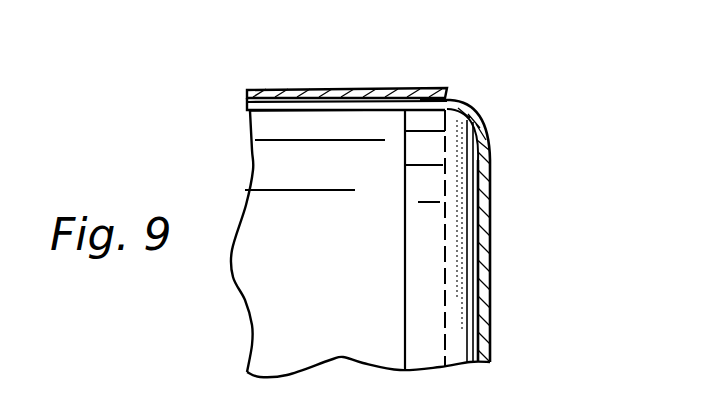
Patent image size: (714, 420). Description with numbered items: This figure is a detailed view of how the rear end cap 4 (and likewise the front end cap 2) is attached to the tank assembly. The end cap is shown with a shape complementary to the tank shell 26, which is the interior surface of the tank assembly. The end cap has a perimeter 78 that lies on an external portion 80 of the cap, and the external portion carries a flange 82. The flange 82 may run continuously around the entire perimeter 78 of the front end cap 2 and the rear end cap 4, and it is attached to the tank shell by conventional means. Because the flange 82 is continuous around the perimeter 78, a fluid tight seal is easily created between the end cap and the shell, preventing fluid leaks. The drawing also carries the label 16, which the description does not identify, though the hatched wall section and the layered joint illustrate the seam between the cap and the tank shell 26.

The front end cap 2 is at (531, 257).
The rear end cap 4 is at (491, 222).
The closure plate 16 is at (247, 113).
The tank shell 26 is at (247, 180).
The perimeter 78 is at (470, 98).
The external portion 80 is at (453, 97).
The flange 82 is at (423, 102).